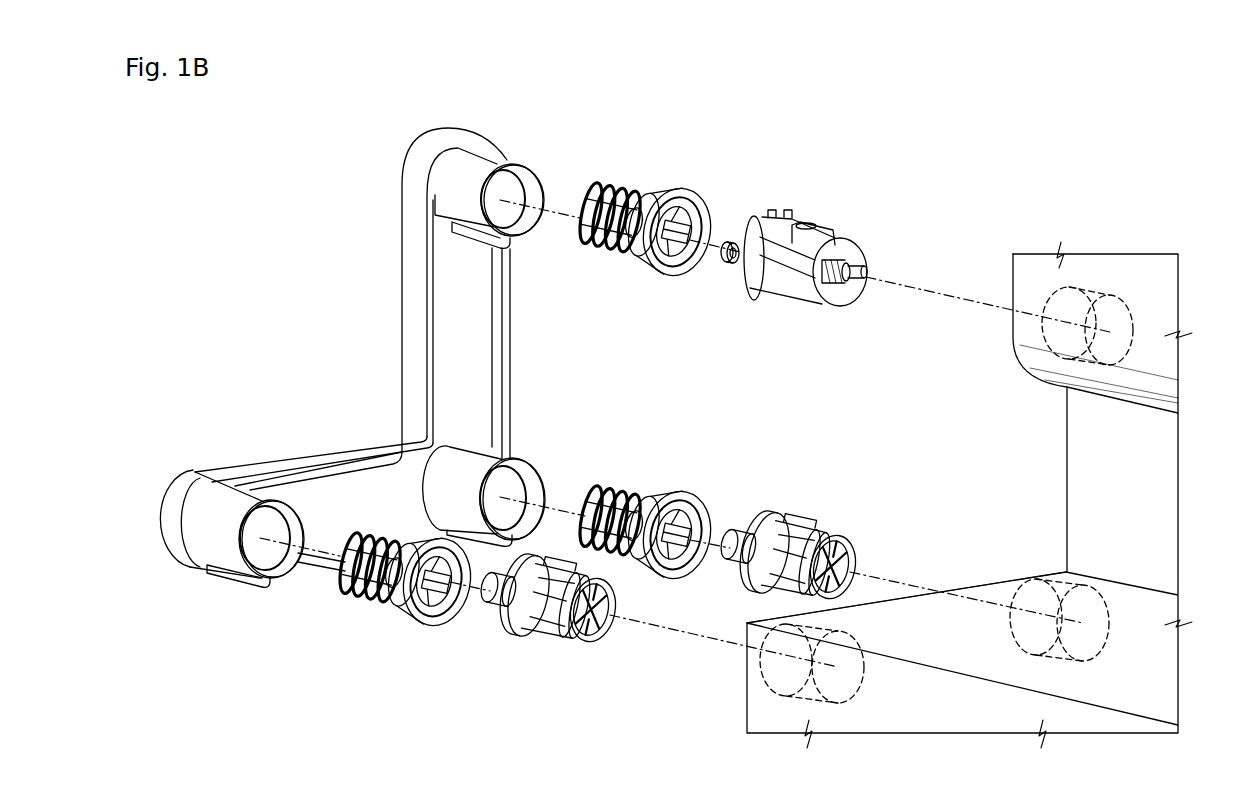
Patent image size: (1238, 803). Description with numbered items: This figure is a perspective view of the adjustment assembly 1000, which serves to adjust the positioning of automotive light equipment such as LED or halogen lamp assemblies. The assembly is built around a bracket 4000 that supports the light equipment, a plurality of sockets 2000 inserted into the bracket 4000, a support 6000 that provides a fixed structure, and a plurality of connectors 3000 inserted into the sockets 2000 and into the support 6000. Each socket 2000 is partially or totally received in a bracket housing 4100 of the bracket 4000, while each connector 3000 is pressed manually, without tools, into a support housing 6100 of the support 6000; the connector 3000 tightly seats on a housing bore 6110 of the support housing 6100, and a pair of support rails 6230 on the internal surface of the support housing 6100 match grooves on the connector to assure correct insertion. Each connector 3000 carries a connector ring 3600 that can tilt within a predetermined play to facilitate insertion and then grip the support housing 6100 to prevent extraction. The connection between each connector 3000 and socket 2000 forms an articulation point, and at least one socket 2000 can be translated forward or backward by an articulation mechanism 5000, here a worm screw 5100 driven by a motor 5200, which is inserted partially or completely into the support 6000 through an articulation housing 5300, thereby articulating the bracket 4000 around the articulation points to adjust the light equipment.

The adjustment assembly 1000 is at (747, 437).
The socket 2000 is at (637, 183).
The connector 3000 is at (860, 567).
The connector ring 3600 is at (826, 533).
The bracket 4000 is at (358, 250).
The bracket housing 4100 is at (233, 498).
The articulation mechanism 5000 is at (783, 253).
The worm screw 5100 is at (731, 263).
The motor 5200 is at (785, 290).
The articulation housing 5300 is at (1125, 293).
The support 6000 is at (1043, 442).
The support housing 6100 is at (1048, 540).
The housing bore 6110 is at (778, 626).
The support rails 6230 is at (790, 624).